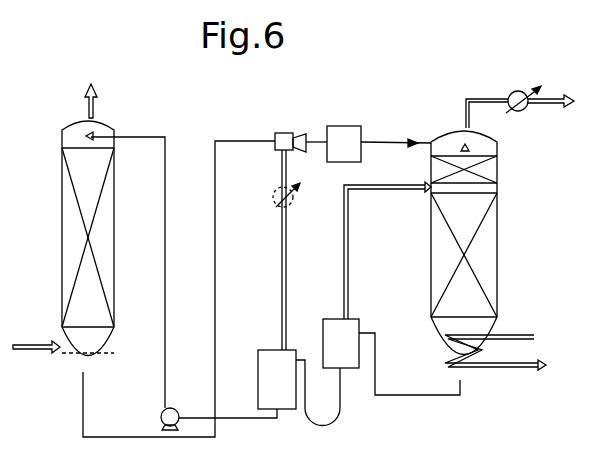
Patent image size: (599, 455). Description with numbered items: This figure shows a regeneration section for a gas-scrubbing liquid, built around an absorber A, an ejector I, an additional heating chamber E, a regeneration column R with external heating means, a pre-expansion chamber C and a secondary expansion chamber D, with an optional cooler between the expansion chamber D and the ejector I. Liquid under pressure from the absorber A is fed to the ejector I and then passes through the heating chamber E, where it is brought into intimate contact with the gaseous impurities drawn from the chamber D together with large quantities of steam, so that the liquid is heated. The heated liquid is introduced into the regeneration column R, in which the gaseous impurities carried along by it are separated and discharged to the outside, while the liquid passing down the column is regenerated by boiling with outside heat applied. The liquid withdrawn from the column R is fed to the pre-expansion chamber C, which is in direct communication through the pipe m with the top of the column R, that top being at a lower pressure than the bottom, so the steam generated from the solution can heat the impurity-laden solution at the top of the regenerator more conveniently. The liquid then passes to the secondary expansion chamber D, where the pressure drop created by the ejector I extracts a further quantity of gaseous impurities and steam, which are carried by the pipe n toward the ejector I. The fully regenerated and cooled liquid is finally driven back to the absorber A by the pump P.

The absorber A is at (72, 220).
The pump P is at (177, 408).
The ejector I is at (290, 130).
The heating chamber E is at (344, 133).
The pipe n is at (272, 240).
The secondary expansion chamber D is at (266, 379).
The pre-expansion chamber C is at (333, 343).
The pipe m is at (356, 290).
The regeneration column R is at (502, 228).